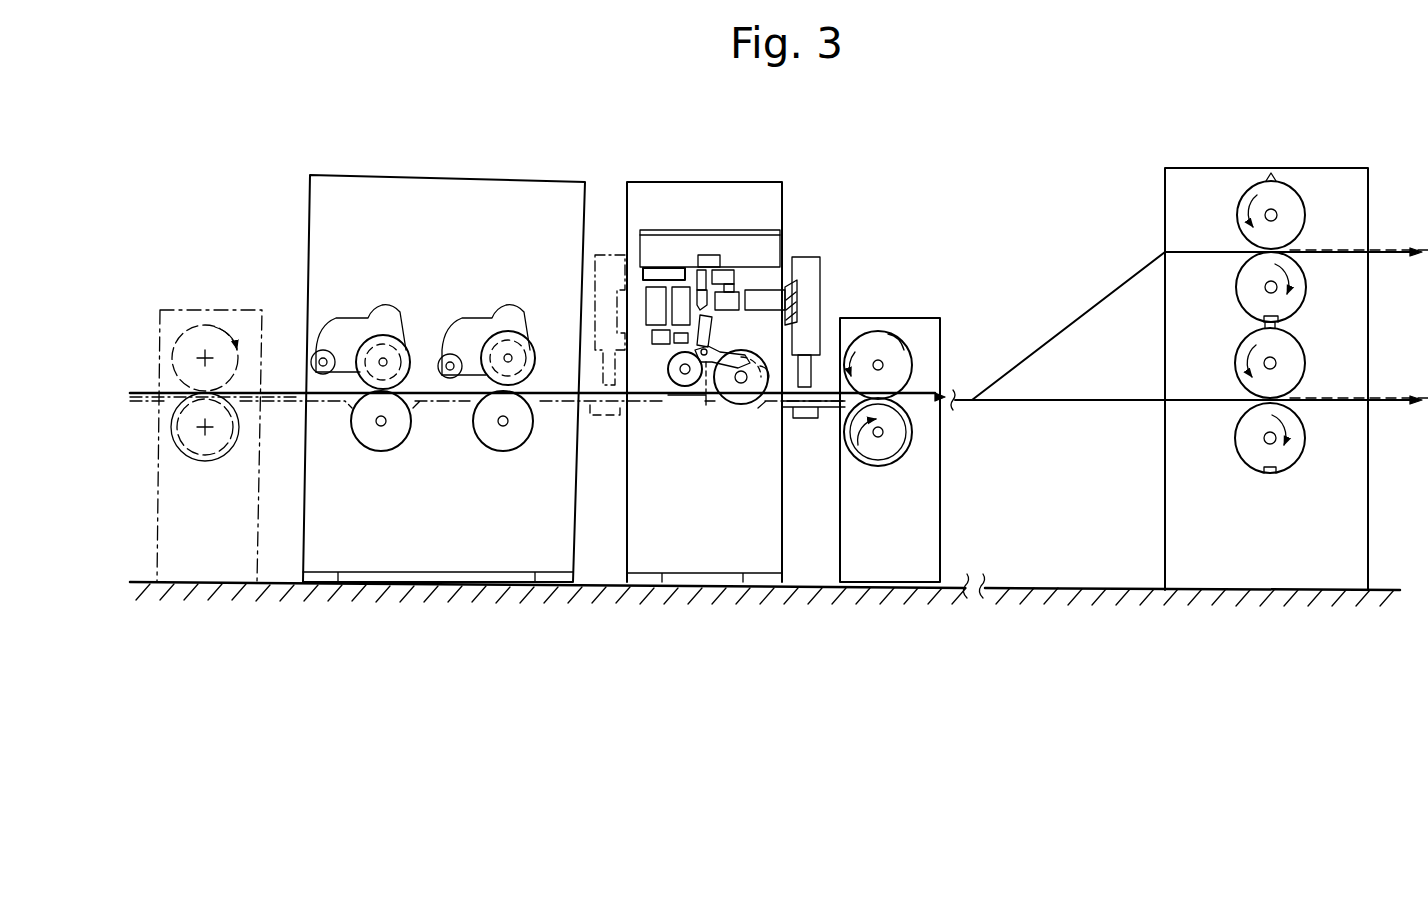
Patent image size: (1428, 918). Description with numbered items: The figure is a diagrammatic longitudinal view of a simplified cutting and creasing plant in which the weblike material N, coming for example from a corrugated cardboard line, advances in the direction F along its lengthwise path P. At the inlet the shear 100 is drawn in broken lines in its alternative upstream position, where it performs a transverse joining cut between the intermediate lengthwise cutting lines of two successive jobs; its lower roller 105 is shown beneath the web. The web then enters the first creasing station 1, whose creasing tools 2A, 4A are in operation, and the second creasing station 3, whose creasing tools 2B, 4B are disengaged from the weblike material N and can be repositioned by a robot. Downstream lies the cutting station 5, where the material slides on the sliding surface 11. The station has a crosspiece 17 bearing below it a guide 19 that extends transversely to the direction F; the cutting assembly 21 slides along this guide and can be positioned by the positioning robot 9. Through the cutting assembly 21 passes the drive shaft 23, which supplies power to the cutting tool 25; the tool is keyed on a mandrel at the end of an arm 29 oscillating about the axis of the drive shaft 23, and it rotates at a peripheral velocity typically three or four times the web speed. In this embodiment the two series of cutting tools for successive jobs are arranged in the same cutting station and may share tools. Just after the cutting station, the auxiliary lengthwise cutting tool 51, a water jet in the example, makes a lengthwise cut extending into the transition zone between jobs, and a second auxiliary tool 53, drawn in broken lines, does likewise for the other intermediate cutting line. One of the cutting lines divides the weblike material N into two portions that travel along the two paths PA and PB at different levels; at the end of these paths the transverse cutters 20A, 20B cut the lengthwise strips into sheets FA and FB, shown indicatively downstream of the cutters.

The first creasing station 1 is at (360, 300).
The creasing tool 2A is at (406, 337).
The creasing tool 2B is at (526, 337).
The second creasing station 3 is at (480, 300).
The creasing tool 4A is at (390, 442).
The creasing tool 4B is at (510, 442).
The first cutting station 5 is at (730, 440).
The positioning robot 9 is at (763, 290).
The sliding surface 11 is at (692, 407).
The crosspiece 17 is at (686, 270).
The guide 19 is at (708, 338).
The cutting assembly 21 is at (660, 346).
The drive shaft 23 is at (680, 384).
The cutting tool 25 is at (742, 405).
The arm 29 is at (710, 382).
The auxiliary lengthwise cutting tool 51 is at (812, 264).
The second auxiliary tool 53 is at (614, 254).
The shear 100 is at (225, 303).
The lower roller 105 is at (222, 460).
The transverse cutter 20A is at (1310, 230).
The transverse cutter 20B is at (1311, 396).
The weblike material N is at (274, 392).
The lengthwise path P is at (566, 384).
The path PA is at (1100, 296).
The path PB is at (1108, 400).
The direction of advance F is at (914, 402).
The sheets FA is at (1346, 250).
The sheets FB is at (1345, 396).